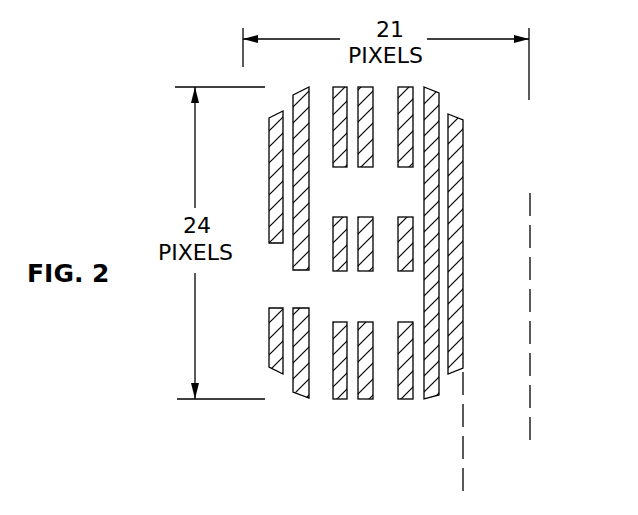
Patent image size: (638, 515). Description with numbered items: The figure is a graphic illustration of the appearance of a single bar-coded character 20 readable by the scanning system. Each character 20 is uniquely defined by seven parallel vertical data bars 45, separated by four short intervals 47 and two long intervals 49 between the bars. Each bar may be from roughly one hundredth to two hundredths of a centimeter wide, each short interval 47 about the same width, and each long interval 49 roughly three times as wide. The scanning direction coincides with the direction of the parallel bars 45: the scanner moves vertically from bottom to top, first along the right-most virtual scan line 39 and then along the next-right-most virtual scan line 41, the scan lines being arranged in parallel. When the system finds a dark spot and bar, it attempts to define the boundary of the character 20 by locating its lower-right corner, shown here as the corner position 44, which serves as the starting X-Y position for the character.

The character 20 is at (406, 222).
The right-most virtual scan line 39 is at (530, 372).
The next-right-most virtual scan line 41 is at (463, 484).
The corner position 44 is at (463, 369).
The parallel vertical bars 45 is at (458, 76).
The short intervals 47 is at (283, 108).
The long intervals 49 is at (383, 90).